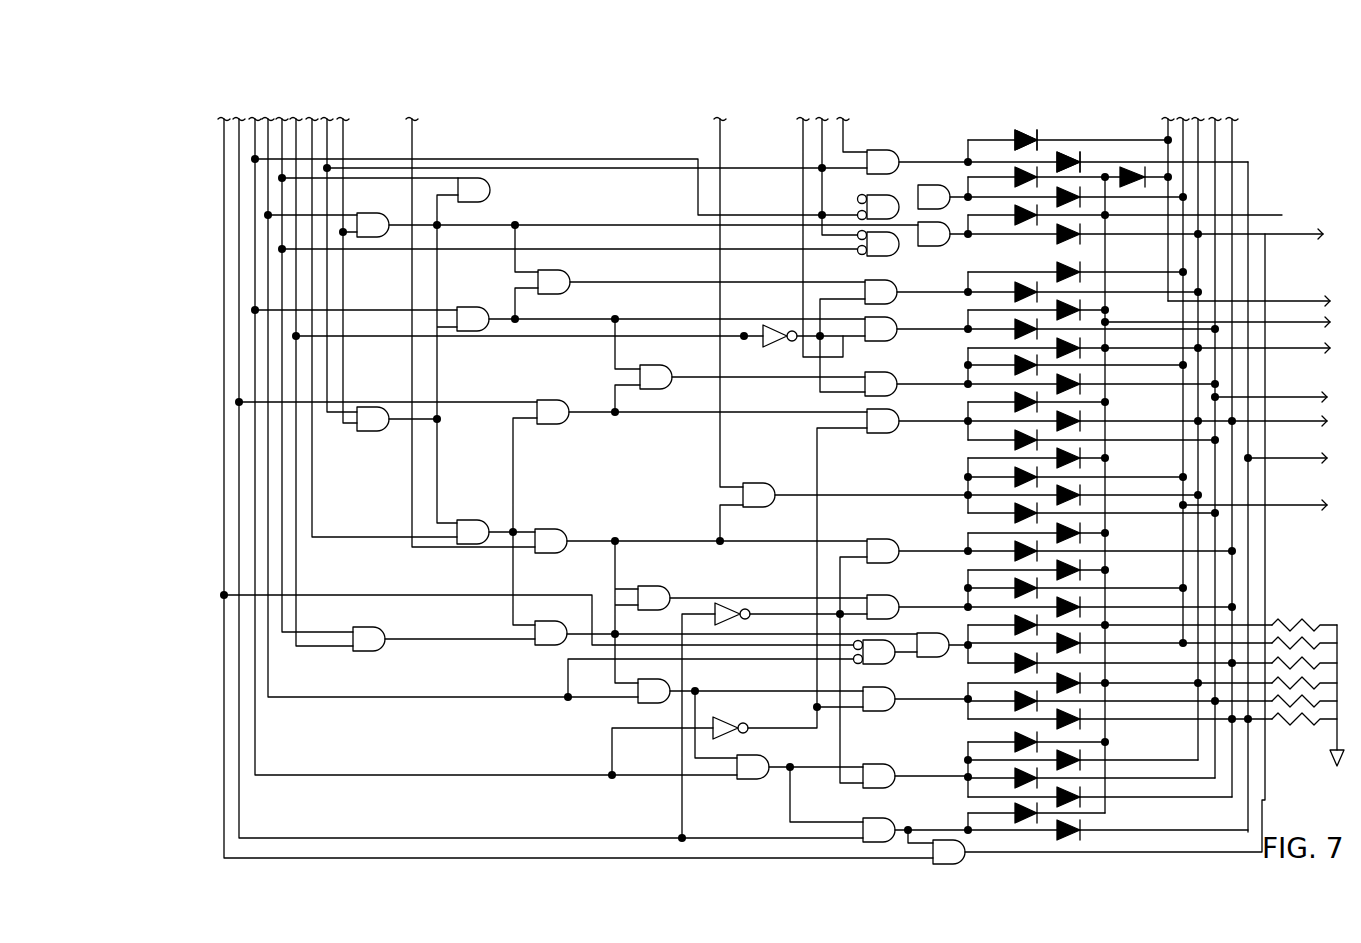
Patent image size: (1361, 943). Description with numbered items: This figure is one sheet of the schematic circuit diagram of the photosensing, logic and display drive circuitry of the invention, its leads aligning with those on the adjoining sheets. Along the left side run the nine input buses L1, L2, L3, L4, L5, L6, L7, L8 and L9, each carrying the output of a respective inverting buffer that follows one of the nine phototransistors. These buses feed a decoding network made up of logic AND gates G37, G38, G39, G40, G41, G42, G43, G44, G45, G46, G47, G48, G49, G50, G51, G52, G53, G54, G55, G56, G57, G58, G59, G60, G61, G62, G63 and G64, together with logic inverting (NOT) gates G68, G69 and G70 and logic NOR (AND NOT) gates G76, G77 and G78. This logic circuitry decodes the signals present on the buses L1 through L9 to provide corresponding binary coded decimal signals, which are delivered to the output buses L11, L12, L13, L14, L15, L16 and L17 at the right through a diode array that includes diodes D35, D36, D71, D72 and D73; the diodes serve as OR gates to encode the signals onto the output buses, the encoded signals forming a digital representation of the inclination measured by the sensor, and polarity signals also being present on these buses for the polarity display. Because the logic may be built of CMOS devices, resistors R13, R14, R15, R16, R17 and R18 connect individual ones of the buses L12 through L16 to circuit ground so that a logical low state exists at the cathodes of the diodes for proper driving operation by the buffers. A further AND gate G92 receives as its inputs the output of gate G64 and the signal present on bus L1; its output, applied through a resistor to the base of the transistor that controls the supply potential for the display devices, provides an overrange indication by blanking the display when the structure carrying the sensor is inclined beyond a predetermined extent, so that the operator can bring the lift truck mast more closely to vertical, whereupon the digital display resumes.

The bus L1 is at (224, 277).
The bus L2 is at (239, 296).
The bus L3 is at (255, 327).
The bus L4 is at (268, 350).
The bus L5 is at (282, 375).
The bus L6 is at (296, 425).
The bus L7 is at (312, 141).
The bus L8 is at (327, 174).
The bus L9 is at (343, 200).
The output bus L11 is at (1168, 148).
The output bus L12 is at (1183, 155).
The output bus L13 is at (1198, 172).
The output bus L14 is at (1215, 193).
The output bus L15 is at (1232, 207).
The output bus L16 is at (1248, 218).
The output bus L17 is at (1211, 495).
The logic AND gate G37 is at (897, 152).
The logic AND gate G38 is at (492, 185).
The logic AND gate G39 is at (394, 215).
The logic AND gate G40 is at (948, 188).
The logic AND gate G41 is at (946, 257).
The logic AND gate G42 is at (572, 278).
The logic AND gate G43 is at (897, 288).
The logic AND gate G44 is at (897, 325).
The logic AND gate G45 is at (489, 308).
The logic AND gate G46 is at (674, 367).
The logic AND gate G47 is at (897, 378).
The logic AND gate G48 is at (899, 414).
The logic AND gate G49 is at (579, 400).
The logic AND gate G50 is at (380, 433).
The logic AND gate G51 is at (776, 486).
The logic AND gate G52 is at (490, 522).
The logic AND gate G53 is at (568, 530).
The logic AND gate G54 is at (899, 545).
The logic AND gate G55 is at (670, 588).
The logic AND gate G56 is at (899, 601).
The logic AND gate G57 is at (386, 630).
The logic AND gate G58 is at (568, 623).
The logic AND gate G59 is at (948, 636).
The logic AND gate G60 is at (670, 682).
The logic AND gate G61 is at (895, 693).
The logic AND gate G62 is at (767, 760).
The logic AND gate G63 is at (895, 770).
The logic AND gate G64 is at (893, 822).
The logic inverting (NOT) gate G68 is at (780, 350).
The logic inverting (NOT) gate G69 is at (735, 603).
The logic inverting (NOT) gate G70 is at (730, 718).
The logic NOR (AND NOT) gate G76 is at (878, 194).
The logic NOR (AND NOT) gate G77 is at (880, 257).
The logic NOR (AND NOT) gate G78 is at (880, 665).
The AND gate G92 is at (965, 848).
The diode D35 is at (1028, 128).
The diode D36 is at (1068, 150).
The diode D71 is at (1022, 825).
The diode D72 is at (1068, 840).
The diode D73 is at (1148, 160).
The resistor R13 is at (1282, 620).
The resistor R14 is at (1292, 638).
The resistor R15 is at (1302, 657).
The resistor R16 is at (1280, 722).
The resistor R17 is at (1290, 722).
The resistor R18 is at (1300, 722).